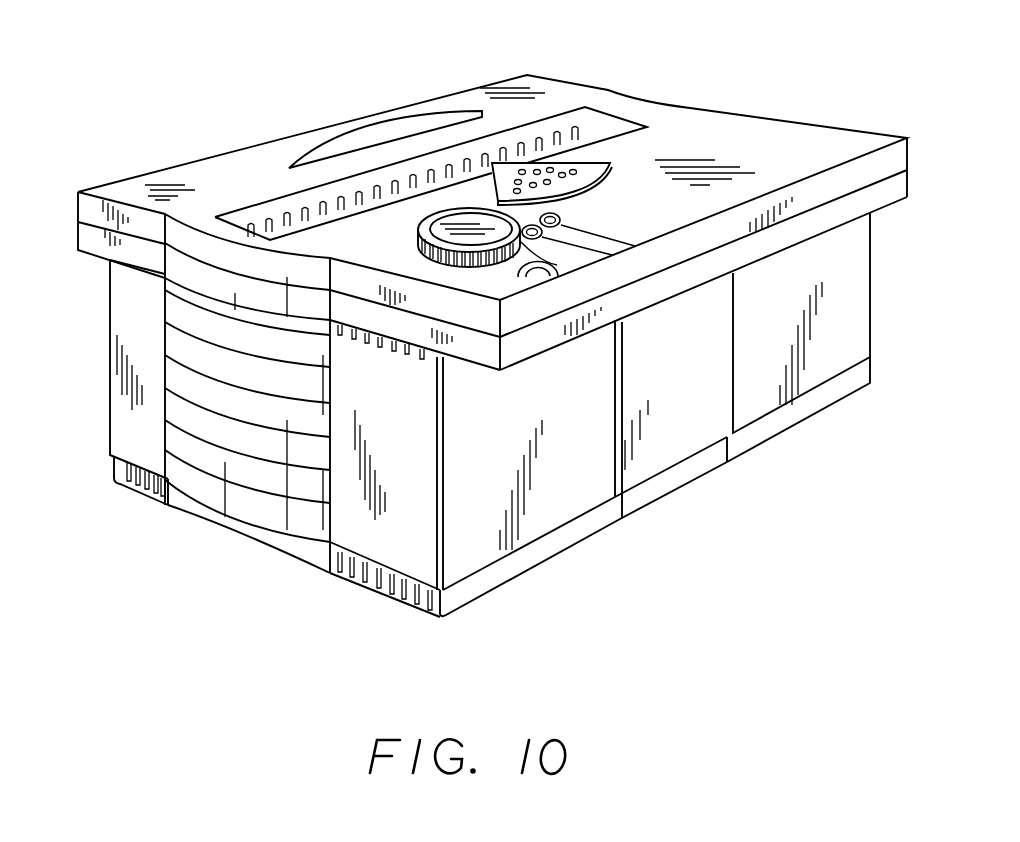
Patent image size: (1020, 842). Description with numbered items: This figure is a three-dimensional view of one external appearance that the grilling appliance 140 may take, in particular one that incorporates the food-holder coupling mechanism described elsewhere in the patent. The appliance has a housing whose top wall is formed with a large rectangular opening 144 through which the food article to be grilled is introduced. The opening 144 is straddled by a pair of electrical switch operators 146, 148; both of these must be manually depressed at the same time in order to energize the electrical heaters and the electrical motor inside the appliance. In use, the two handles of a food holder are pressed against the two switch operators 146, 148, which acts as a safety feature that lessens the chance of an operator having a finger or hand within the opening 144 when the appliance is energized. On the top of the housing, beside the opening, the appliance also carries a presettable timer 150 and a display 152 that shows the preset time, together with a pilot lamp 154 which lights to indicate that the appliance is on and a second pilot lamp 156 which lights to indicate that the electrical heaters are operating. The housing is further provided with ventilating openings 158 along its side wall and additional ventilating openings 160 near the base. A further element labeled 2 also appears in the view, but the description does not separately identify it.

The grilling appliance 140 is at (207, 135).
The housing 2 is at (115, 409).
The rectangular opening 144 is at (292, 197).
The electrical switch operator 146 is at (383, 128).
The electrical switch operator 148 is at (507, 162).
The presettable timer 150 is at (455, 262).
The display 152 is at (562, 278).
The pilot lamp 154 is at (561, 215).
The second pilot lamp 156 is at (540, 239).
The ventilating openings 158 is at (363, 340).
The ventilating openings 160 is at (368, 584).